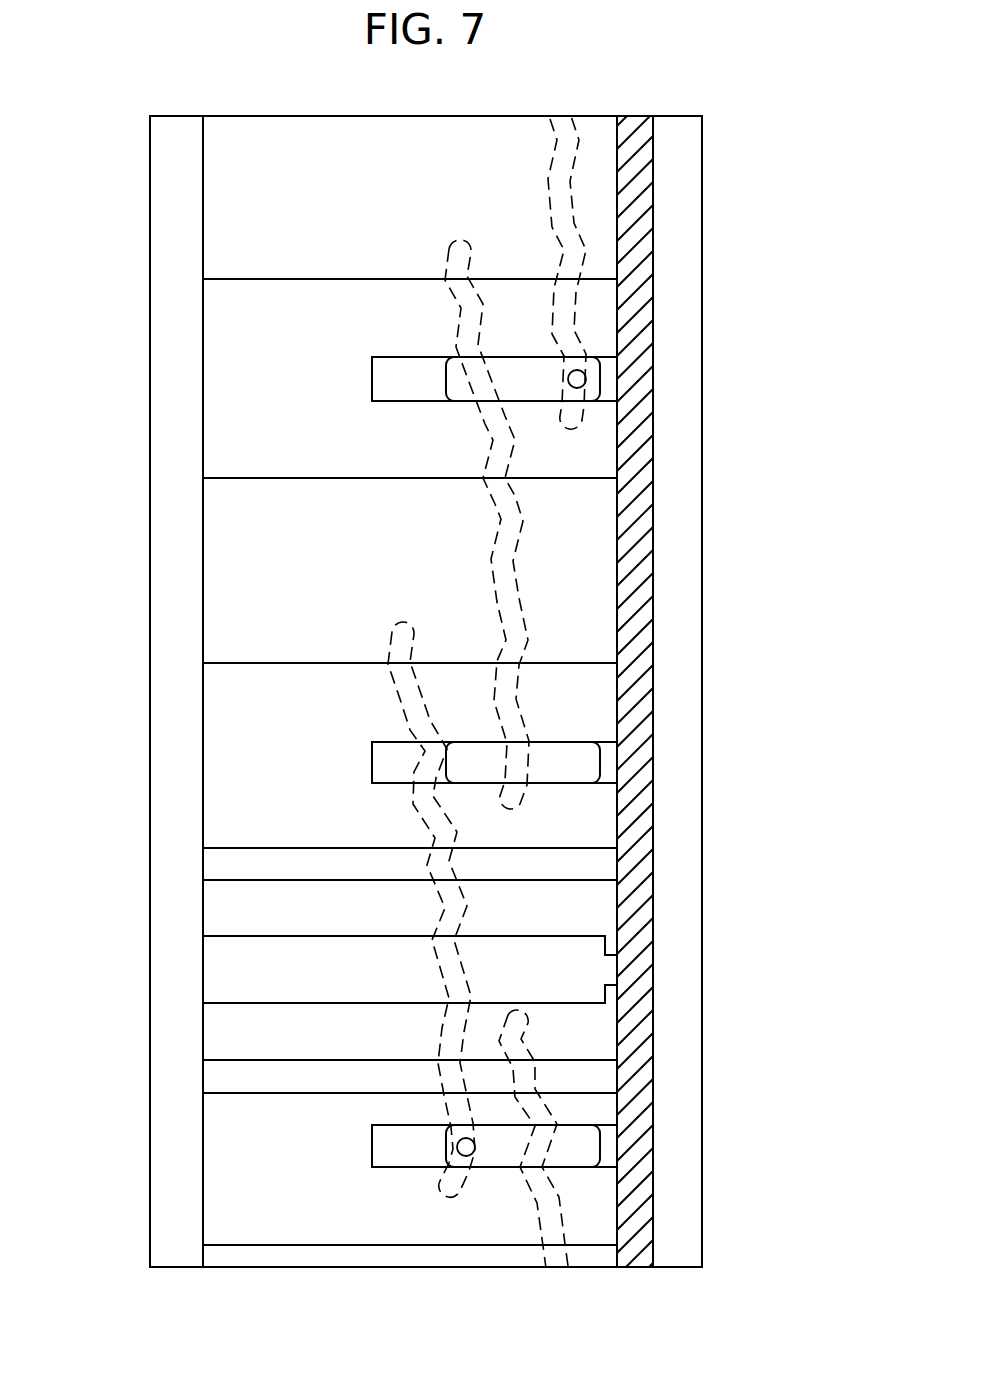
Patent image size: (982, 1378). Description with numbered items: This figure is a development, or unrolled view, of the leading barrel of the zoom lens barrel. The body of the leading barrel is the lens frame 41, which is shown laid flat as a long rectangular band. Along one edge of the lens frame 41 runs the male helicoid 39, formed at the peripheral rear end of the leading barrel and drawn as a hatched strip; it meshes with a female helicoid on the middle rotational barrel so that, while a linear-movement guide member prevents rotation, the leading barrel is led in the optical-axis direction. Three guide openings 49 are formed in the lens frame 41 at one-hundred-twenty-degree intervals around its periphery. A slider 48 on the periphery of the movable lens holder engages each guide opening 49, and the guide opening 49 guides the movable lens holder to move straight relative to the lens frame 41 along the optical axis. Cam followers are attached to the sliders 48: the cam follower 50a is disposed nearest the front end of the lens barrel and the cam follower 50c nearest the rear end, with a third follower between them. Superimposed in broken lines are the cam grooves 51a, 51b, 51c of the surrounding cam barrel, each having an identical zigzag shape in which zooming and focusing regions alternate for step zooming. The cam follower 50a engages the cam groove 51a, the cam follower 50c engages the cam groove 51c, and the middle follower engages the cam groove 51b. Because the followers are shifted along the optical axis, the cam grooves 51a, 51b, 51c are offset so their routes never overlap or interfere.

The male helicoid 39 is at (637, 143).
The lens frame 41 is at (150, 583).
The slider 48 is at (457, 364).
The guide opening 49 is at (372, 370).
The cam follower 50a is at (457, 1143).
The cam follower 50c is at (586, 378).
The cam groove 51a is at (410, 705).
The cam groove 51b is at (510, 518).
The cam groove 51c is at (555, 182).